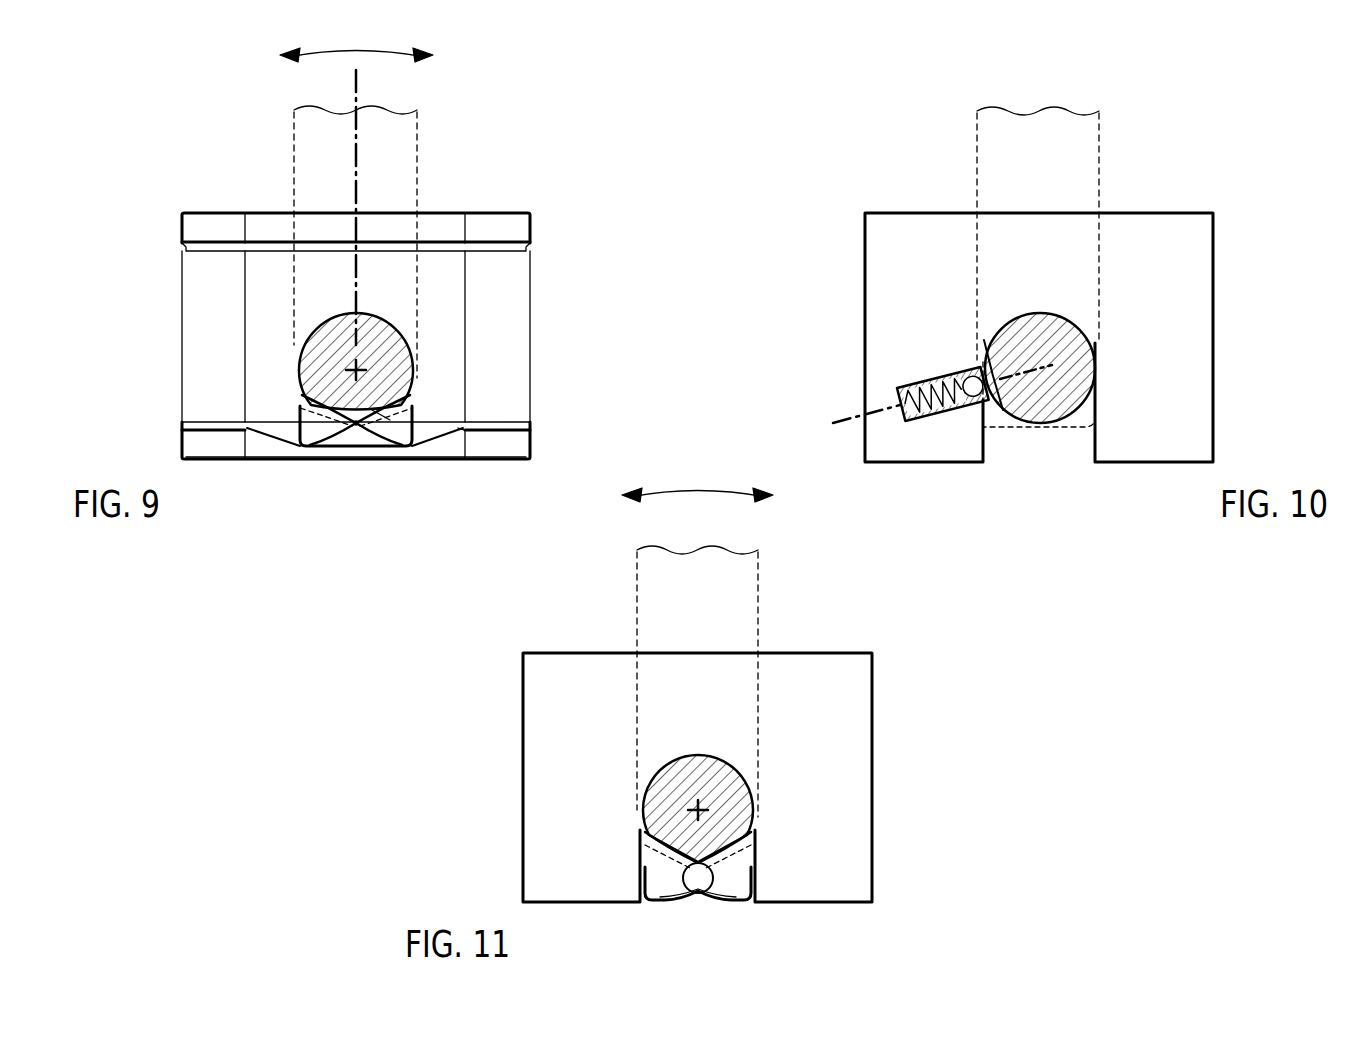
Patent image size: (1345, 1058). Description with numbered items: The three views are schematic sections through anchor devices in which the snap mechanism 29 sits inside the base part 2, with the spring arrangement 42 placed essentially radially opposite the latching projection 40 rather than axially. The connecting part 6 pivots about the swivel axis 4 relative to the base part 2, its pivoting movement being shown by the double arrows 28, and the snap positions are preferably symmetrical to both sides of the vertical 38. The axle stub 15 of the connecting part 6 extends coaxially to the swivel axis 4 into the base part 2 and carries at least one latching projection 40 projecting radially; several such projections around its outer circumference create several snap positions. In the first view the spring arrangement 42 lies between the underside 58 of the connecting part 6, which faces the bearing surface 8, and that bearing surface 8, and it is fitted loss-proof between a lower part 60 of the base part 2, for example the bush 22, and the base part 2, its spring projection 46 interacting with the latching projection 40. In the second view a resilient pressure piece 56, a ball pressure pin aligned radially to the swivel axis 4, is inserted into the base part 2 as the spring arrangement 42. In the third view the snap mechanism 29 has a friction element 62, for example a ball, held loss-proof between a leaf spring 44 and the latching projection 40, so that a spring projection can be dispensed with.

In FIG. 9, the base part 2 is at (532, 318).
In FIG. 10, the base part 2 is at (1200, 316).
In FIG. 11, the base part 2 is at (860, 757).
In FIG. 9, the swivel axis 4 is at (393, 333).
In FIG. 11, the swivel axis 4 is at (714, 775).
In FIG. 9, the connecting part 6 is at (407, 142).
In FIG. 10, the connecting part 6 is at (1092, 140).
In FIG. 11, the connecting part 6 is at (748, 583).
In FIG. 9, the bearing surface 8 is at (462, 465).
In FIG. 9, the axle stub 15 is at (338, 330).
In FIG. 10, the axle stub 15 is at (1058, 326).
In FIG. 11, the axle stub 15 is at (670, 778).
In FIG. 9, the bush 22 is at (503, 452).
In FIG. 9, the double arrows 28 is at (333, 52).
In FIG. 11, the double arrows 28 is at (672, 493).
In FIG. 10, the snap mechanism 29 is at (993, 327).
In FIG. 11, the snap mechanism 29 is at (724, 879).
In FIG. 9, the vertical 38 is at (360, 85).
In FIG. 9, the latching projection 40 is at (413, 391).
In FIG. 10, the latching projection 40 is at (983, 356).
In FIG. 11, the latching projection 40 is at (705, 852).
In FIG. 9, the spring arrangement 42 is at (292, 467).
In FIG. 10, the spring arrangement 42 is at (911, 440).
In FIG. 11, the spring arrangement 42 is at (658, 911).
In FIG. 11, the spring 44 is at (727, 905).
In FIG. 9, the spring projection 46 is at (356, 428).
In FIG. 10, the resilient pressure piece 56 is at (946, 424).
In FIG. 9, the underside 58 is at (388, 422).
In FIG. 9, the lower part 60 is at (367, 484).
In FIG. 11, the friction element 62 is at (698, 888).